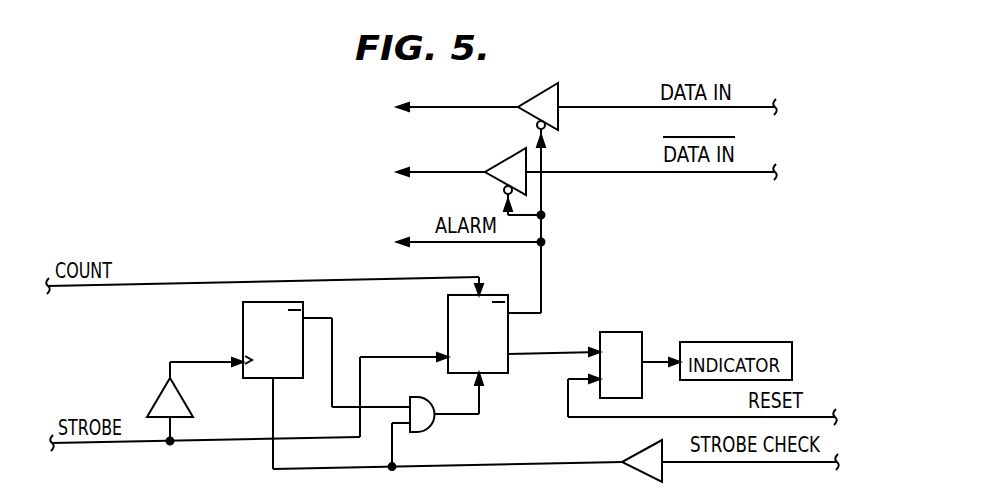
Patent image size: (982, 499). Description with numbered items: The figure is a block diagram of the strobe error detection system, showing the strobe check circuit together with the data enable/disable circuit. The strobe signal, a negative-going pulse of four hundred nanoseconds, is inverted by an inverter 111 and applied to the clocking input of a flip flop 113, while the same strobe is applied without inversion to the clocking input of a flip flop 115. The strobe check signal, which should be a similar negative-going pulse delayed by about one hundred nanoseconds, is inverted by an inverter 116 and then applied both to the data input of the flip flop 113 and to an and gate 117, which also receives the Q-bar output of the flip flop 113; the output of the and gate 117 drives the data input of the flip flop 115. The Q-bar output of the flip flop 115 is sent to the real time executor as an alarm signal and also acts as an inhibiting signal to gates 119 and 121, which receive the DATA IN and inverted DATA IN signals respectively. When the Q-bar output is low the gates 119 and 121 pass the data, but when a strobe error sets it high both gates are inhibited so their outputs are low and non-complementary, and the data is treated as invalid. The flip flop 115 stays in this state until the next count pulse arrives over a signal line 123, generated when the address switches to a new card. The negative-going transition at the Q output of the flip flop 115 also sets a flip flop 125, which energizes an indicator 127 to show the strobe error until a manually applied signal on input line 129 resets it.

The inverter 111 is at (160, 400).
The flip flop 113 is at (243, 318).
The flip flop 115 is at (448, 312).
The inverter 116 is at (650, 445).
The and gate 117 is at (415, 397).
The gate 119 is at (554, 98).
The gate 121 is at (508, 158).
The signal line 123 is at (228, 281).
The flip flop 125 is at (640, 332).
The indicator 127 is at (776, 342).
The input line 129 is at (589, 419).